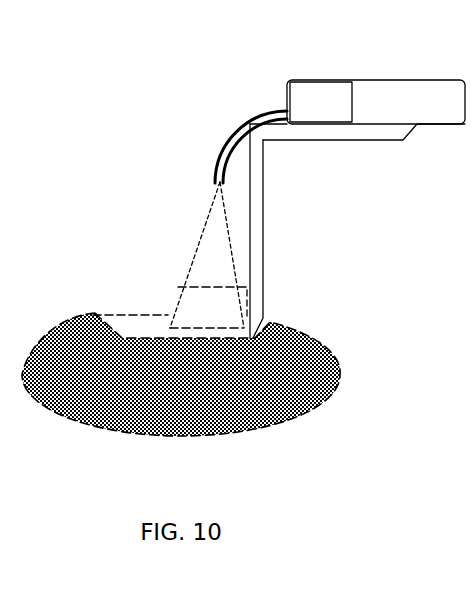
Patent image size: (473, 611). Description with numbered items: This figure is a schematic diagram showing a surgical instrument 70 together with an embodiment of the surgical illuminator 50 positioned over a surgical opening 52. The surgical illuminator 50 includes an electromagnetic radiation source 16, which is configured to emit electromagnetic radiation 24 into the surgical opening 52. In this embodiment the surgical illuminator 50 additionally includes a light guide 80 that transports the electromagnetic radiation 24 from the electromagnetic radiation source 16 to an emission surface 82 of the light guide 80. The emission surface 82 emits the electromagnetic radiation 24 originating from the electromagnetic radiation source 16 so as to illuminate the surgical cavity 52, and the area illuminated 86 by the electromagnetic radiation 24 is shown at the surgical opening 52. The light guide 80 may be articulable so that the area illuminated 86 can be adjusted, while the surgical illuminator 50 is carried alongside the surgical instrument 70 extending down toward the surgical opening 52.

The surgical illuminator 50 is at (305, 67).
The electromagnetic radiation source 16 is at (308, 115).
The surgical instrument 70 is at (262, 238).
The light guide 80 is at (225, 133).
The emission surface 82 is at (213, 183).
The electromagnetic radiation 24 is at (208, 257).
The area illuminated 86 is at (170, 312).
The surgical opening 52 is at (232, 332).